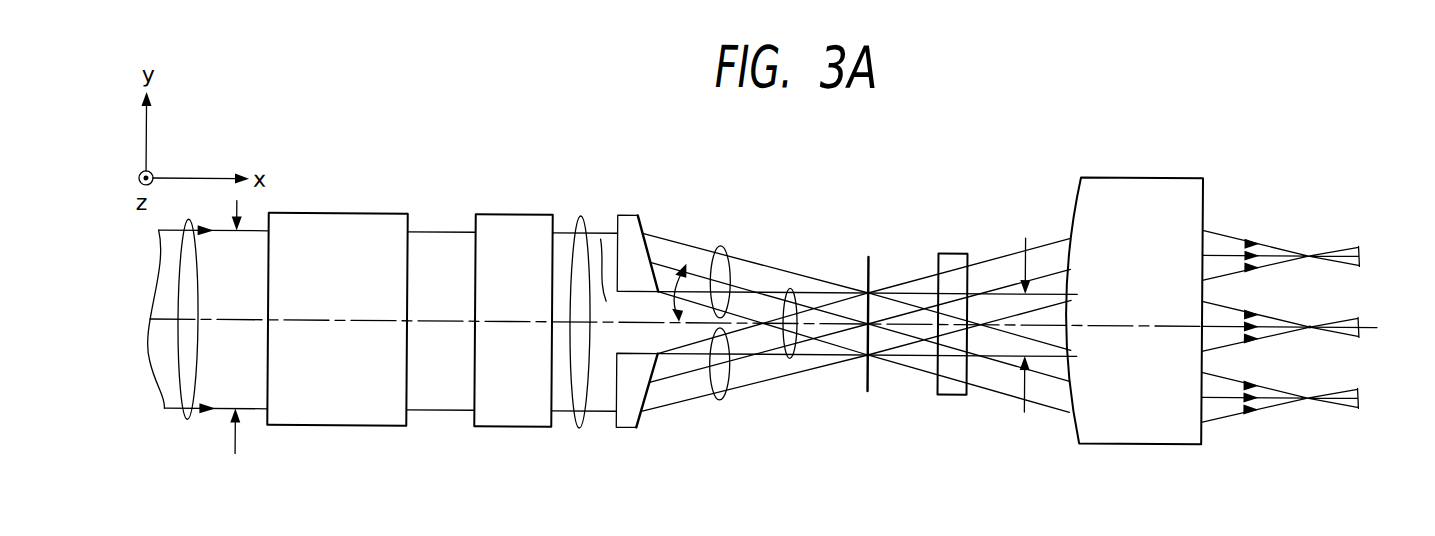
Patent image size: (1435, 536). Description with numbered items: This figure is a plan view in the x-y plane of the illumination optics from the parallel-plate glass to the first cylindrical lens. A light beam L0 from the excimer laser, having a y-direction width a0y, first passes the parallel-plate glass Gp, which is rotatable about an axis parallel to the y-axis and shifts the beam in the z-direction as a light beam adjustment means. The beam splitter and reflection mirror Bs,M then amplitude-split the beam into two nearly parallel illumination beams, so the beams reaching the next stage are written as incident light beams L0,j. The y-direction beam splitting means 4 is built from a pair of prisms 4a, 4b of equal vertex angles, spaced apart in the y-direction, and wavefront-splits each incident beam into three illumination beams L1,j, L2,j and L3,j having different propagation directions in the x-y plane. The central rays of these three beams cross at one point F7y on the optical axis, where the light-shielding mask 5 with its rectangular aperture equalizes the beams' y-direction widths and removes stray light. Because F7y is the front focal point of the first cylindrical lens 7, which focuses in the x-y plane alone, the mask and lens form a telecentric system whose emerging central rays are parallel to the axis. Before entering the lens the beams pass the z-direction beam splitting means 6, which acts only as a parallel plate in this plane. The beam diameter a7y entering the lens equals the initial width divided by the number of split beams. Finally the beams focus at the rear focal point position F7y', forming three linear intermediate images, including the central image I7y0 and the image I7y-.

The light beam L0 is at (183, 424).
The width in the y-direction of the laser beam a0y is at (240, 340).
The parallel-plate glass Gp is at (352, 216).
The beam splitter and reflection mirror Bs,M is at (493, 216).
The incident light beams L0,j is at (580, 430).
The y-direction beam splitting means 4 is at (600, 267).
The prism 4a is at (628, 216).
The prism 4b is at (620, 353).
The illumination beam L3,j is at (723, 247).
The illumination beam L1,j is at (718, 400).
The illumination beam L2,j is at (790, 359).
The light-shielding mask 5 is at (866, 256).
The first position F7y is at (892, 392).
The z-direction beam splitting means 6 is at (940, 252).
The diameter in the y-direction of the illumination beam entering the lens a7y is at (1018, 308).
The first cylindrical lens 7 is at (1112, 175).
The intermediate image I7y0 is at (1316, 323).
The rear focal point position F7y' is at (1287, 352).
The intermediate image I7y- is at (1312, 394).